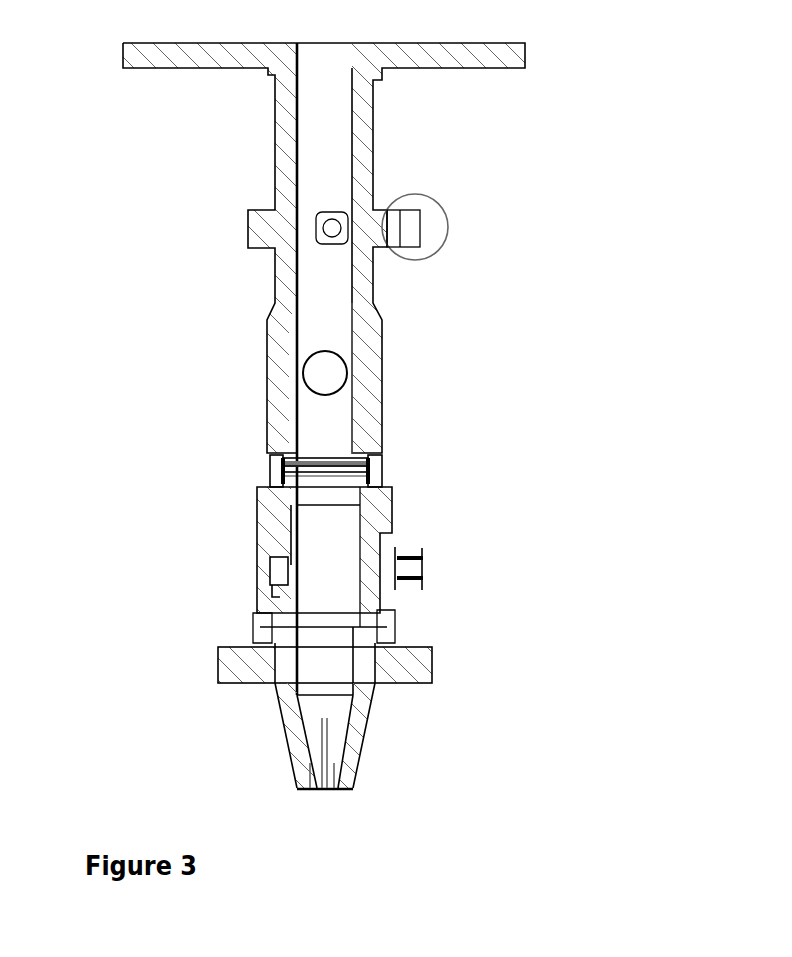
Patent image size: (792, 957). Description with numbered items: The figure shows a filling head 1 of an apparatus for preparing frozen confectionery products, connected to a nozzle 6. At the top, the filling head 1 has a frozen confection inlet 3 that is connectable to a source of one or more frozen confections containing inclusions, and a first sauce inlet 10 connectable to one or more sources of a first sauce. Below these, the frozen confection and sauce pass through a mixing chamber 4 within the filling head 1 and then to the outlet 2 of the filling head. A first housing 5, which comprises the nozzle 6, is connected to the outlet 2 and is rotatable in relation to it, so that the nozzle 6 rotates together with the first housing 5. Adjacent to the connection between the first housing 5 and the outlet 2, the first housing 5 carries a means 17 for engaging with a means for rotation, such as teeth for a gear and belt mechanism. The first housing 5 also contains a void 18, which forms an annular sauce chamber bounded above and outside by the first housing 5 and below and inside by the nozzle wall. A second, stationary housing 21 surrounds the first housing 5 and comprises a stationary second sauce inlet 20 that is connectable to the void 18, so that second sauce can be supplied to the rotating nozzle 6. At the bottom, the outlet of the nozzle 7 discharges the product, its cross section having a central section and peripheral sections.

The filling head 1 is at (606, 95).
The outlet 2 is at (344, 479).
The frozen confection inlet 3 is at (392, 228).
The mixing chamber 4 is at (336, 317).
The first housing 5 is at (384, 512).
The nozzle 6 is at (334, 665).
The outlet of the nozzle 7 is at (366, 786).
The first sauce inlet 10 is at (314, 376).
The means for engaging with a means for rotation 17 is at (276, 476).
The void 18 is at (264, 576).
The second sauce inlet 20 is at (421, 568).
The second housing 21 is at (421, 578).